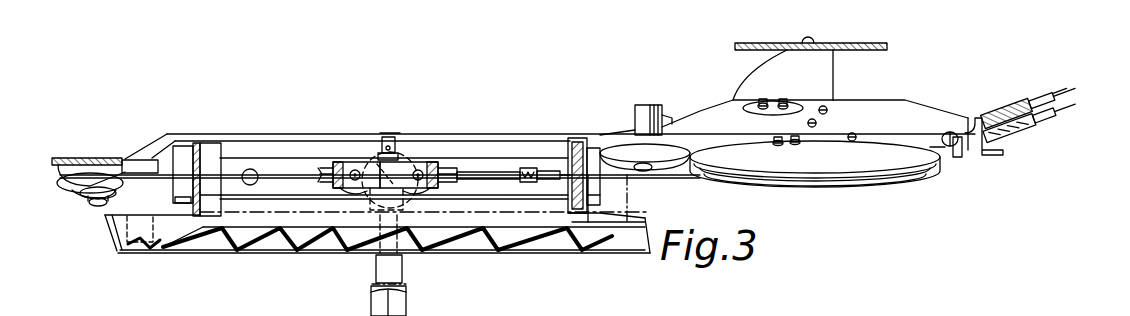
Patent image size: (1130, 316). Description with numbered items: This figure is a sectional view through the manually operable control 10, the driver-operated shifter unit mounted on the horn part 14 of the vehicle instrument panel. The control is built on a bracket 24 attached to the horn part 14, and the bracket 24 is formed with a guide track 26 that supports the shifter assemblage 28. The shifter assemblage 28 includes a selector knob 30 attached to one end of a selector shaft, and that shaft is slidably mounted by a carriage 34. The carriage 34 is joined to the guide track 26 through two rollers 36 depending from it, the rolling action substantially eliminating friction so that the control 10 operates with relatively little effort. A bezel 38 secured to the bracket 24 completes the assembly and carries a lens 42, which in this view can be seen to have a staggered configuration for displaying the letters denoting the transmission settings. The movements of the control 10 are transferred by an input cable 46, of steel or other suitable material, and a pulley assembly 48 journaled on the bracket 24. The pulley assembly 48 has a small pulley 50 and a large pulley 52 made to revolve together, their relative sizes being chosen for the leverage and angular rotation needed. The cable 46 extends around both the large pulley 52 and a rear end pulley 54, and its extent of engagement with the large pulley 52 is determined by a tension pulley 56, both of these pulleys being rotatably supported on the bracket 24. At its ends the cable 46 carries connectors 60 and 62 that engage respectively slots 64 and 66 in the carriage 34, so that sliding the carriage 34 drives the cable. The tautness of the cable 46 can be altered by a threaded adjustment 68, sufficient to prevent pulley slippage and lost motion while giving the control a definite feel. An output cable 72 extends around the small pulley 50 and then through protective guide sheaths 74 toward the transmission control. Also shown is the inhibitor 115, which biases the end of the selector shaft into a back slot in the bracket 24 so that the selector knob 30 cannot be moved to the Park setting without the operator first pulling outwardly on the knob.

The manually operable control 10 is at (513, 256).
The horn part 14 is at (766, 52).
The bracket 24 is at (187, 138).
The guide track 26 is at (487, 163).
The shifter assemblage 28 is at (400, 258).
The selector knob 30 is at (406, 312).
The carriage 34 is at (384, 160).
The rollers 36 is at (421, 163).
The bezel 38 is at (606, 256).
The lens 42 is at (232, 256).
The cable 46 is at (666, 181).
The pulley assembly 48 is at (897, 184).
The small pulley 50 is at (803, 190).
The large pulley 52 is at (874, 187).
The rear end pulley 54 is at (76, 184).
The tension pulley 56 is at (606, 150).
The connector 60 is at (334, 187).
The connector 62 is at (437, 191).
The slot 64 is at (342, 164).
The slot 66 is at (449, 171).
The threaded adjustment 68 is at (539, 172).
The cable 72 is at (1046, 121).
The protective guide sheaths 74 is at (1012, 107).
The inhibitor 115 is at (391, 137).